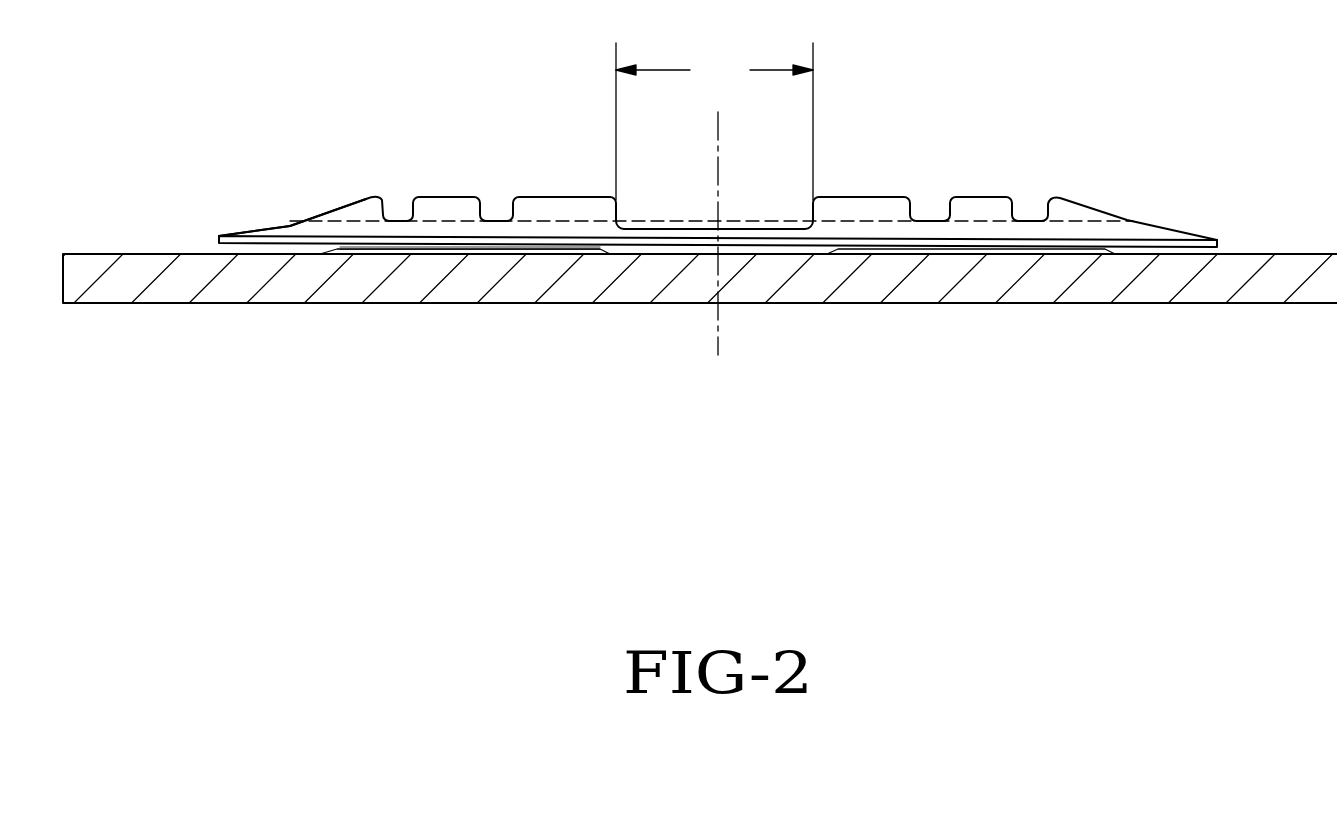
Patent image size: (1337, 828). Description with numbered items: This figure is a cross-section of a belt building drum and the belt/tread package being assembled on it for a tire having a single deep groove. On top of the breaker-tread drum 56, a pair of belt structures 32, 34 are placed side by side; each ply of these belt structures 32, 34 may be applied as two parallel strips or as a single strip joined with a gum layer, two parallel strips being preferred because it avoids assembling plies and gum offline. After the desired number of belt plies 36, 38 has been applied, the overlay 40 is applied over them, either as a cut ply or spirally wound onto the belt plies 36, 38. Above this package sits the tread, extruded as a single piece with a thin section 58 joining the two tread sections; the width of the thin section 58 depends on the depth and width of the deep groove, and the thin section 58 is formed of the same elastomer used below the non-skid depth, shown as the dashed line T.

The belt structure 32 is at (449, 258).
The belt structure 34 is at (972, 258).
The belt ply 36 is at (582, 251).
The belt ply 38 is at (523, 251).
The overlay 40 is at (363, 250).
The breaker-tread drum 56 is at (255, 280).
The thin section 58 is at (682, 228).
The non-skid depth T is at (447, 192).